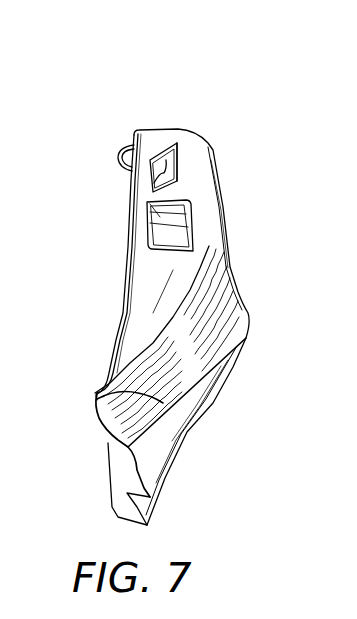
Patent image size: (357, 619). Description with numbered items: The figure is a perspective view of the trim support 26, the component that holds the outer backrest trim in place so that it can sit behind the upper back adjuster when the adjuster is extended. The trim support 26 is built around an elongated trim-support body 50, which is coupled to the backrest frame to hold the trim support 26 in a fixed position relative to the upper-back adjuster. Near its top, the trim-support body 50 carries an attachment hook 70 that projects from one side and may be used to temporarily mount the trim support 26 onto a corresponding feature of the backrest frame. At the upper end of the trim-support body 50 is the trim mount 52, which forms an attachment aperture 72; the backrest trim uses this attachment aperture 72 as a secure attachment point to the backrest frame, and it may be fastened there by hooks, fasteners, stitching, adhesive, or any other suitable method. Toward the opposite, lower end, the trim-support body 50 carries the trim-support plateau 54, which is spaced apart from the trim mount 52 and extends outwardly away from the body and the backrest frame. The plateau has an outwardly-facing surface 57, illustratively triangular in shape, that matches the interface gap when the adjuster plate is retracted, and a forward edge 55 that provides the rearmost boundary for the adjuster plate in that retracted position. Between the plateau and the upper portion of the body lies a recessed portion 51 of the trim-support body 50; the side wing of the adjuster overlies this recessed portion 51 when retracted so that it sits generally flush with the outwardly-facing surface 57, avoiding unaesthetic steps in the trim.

The trim support 26 is at (95, 74).
The trim-support body 50 is at (235, 187).
The recessed portion 51 is at (161, 348).
The trim mount 52 is at (154, 149).
The trim-support plateau 54 is at (219, 391).
The forward edge 55 is at (97, 399).
The outwardly-facing surface 57 is at (163, 440).
The attachment hook 70 is at (116, 149).
The attachment aperture 72 is at (179, 159).